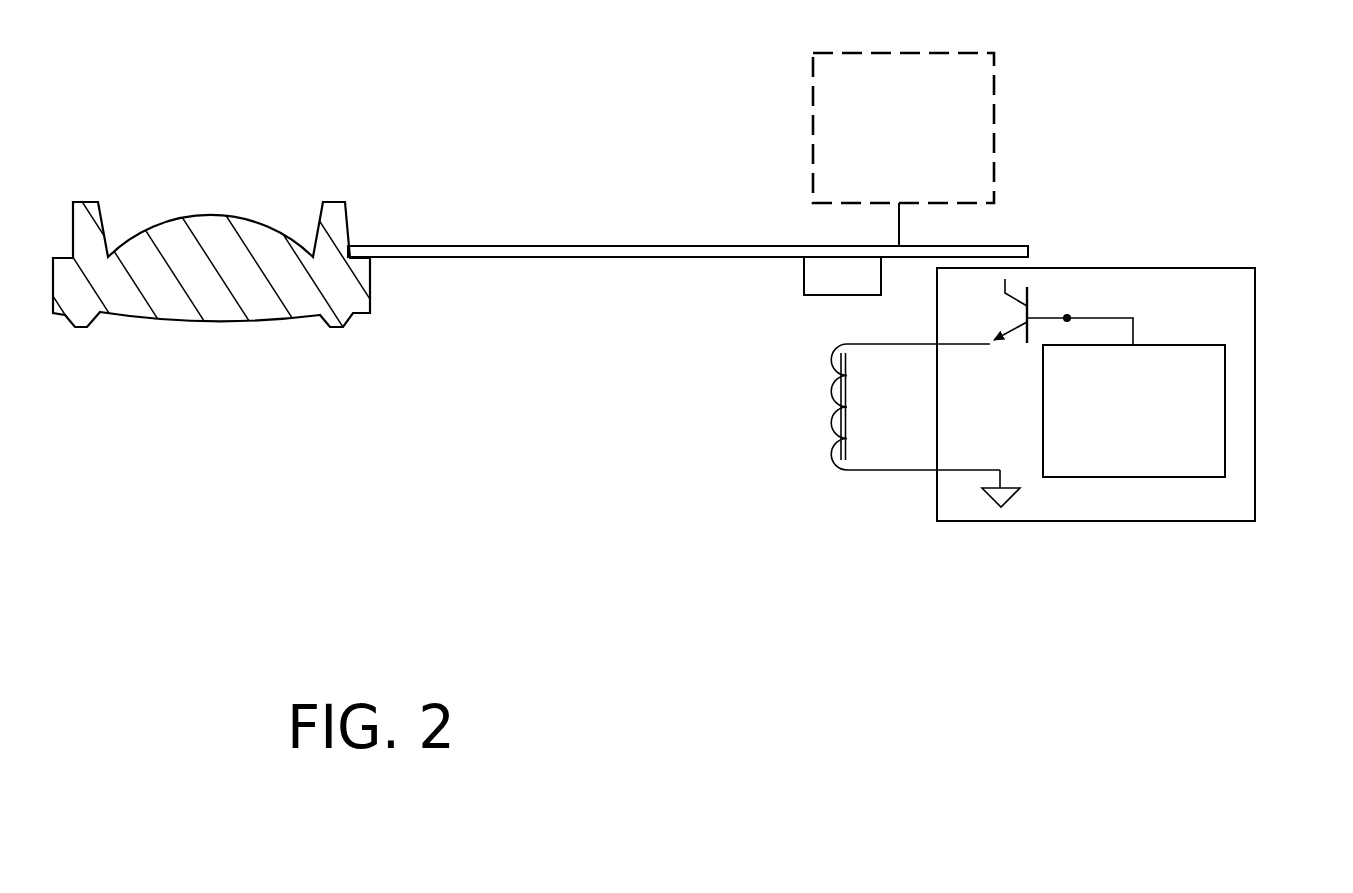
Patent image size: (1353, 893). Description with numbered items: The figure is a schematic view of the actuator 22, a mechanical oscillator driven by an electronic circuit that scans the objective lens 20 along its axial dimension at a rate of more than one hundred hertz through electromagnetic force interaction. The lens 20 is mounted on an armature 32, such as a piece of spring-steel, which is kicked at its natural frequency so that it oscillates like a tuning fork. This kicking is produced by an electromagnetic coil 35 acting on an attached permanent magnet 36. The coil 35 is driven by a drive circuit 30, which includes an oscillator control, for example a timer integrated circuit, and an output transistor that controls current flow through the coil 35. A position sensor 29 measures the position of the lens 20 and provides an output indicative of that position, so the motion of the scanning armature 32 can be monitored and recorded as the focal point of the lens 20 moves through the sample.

The lens 20 is at (347, 199).
The actuator 22 is at (1067, 212).
The position sensor 29 is at (903, 149).
The drive circuit 30 is at (1255, 392).
The armature 32 is at (662, 245).
The coil 35 is at (806, 440).
The permanent magnet 36 is at (803, 275).